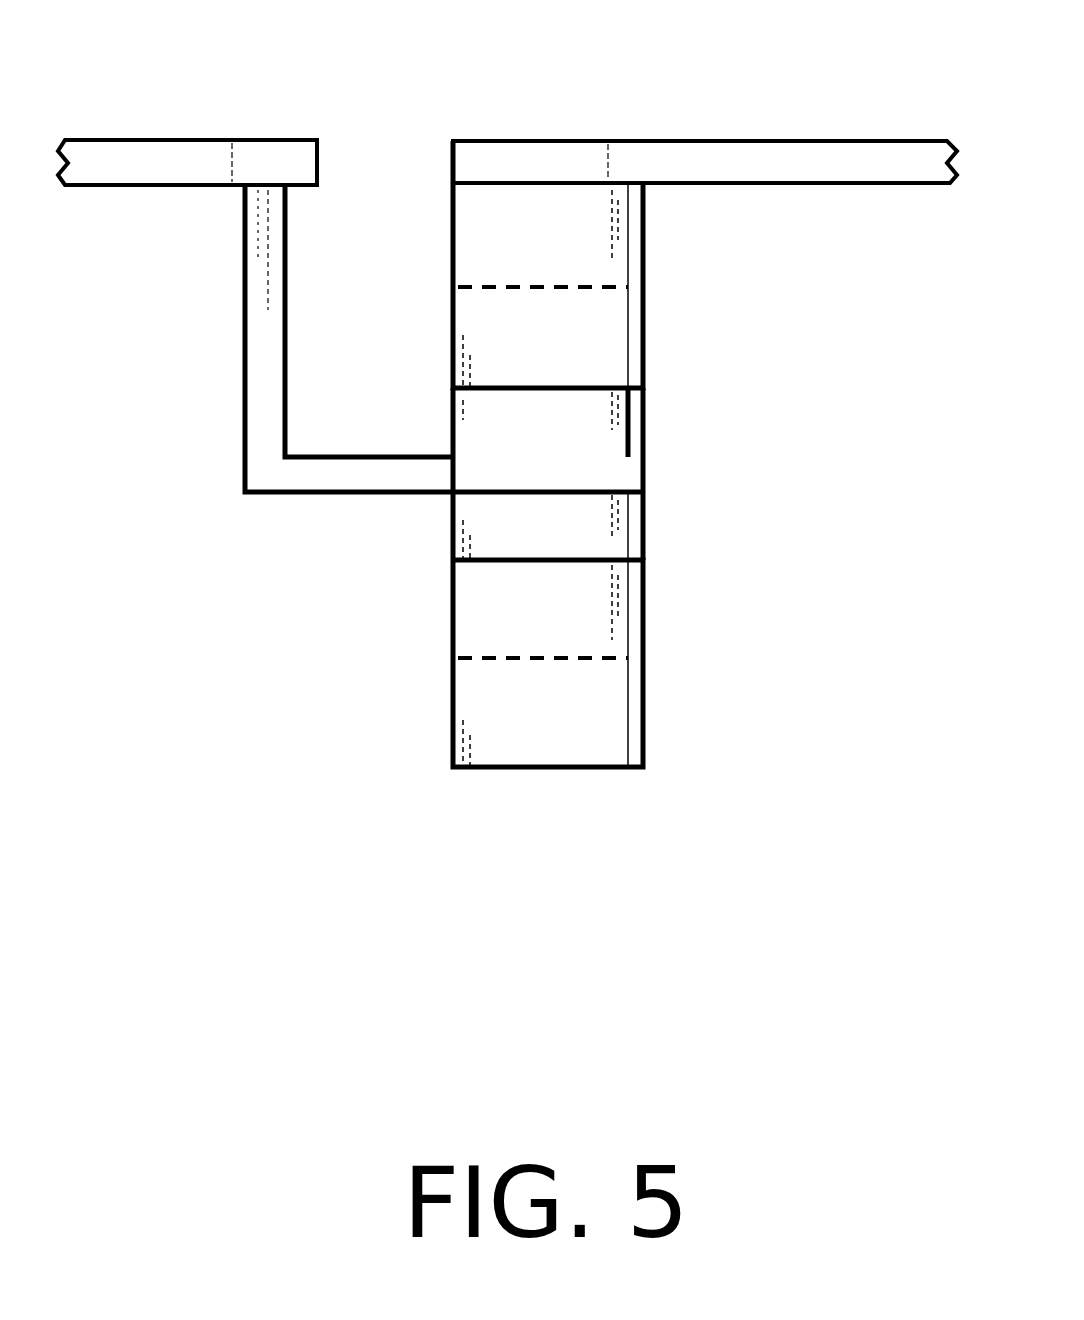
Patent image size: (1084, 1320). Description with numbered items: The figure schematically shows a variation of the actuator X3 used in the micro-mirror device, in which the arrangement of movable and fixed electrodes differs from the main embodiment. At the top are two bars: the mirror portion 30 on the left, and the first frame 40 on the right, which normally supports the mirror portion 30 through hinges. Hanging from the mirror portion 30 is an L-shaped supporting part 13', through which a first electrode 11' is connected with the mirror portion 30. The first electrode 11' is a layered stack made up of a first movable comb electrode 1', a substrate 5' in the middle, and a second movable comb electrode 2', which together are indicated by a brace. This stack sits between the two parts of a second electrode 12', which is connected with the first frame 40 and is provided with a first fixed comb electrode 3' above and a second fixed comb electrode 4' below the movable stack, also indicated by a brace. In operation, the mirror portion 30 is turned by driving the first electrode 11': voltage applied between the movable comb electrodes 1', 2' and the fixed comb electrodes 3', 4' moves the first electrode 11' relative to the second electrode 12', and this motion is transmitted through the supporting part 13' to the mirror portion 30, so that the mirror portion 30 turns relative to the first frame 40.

The mirror portion 30 is at (160, 153).
The first frame 40 is at (843, 153).
The supporting part 13' is at (398, 374).
The first fixed comb electrode 3' is at (449, 408).
The second fixed comb electrode 4' is at (448, 669).
The second electrode 12' is at (389, 460).
The first movable comb electrode 1' is at (622, 418).
The substrate 5' is at (622, 486).
The second movable comb electrode 2' is at (622, 541).
The first electrode 11' is at (679, 479).
The actuator X3 is at (528, 490).